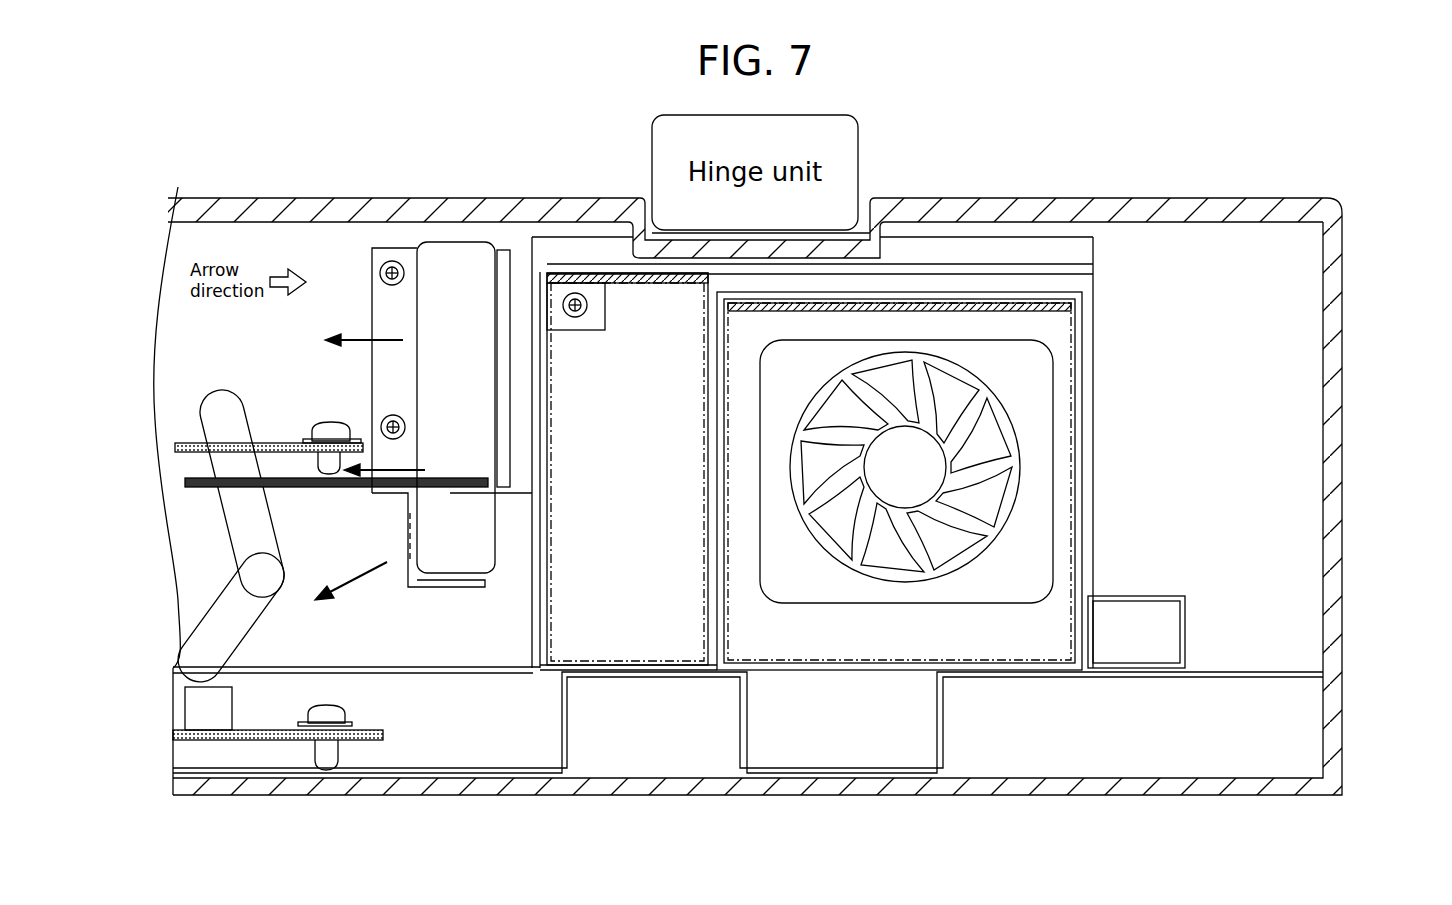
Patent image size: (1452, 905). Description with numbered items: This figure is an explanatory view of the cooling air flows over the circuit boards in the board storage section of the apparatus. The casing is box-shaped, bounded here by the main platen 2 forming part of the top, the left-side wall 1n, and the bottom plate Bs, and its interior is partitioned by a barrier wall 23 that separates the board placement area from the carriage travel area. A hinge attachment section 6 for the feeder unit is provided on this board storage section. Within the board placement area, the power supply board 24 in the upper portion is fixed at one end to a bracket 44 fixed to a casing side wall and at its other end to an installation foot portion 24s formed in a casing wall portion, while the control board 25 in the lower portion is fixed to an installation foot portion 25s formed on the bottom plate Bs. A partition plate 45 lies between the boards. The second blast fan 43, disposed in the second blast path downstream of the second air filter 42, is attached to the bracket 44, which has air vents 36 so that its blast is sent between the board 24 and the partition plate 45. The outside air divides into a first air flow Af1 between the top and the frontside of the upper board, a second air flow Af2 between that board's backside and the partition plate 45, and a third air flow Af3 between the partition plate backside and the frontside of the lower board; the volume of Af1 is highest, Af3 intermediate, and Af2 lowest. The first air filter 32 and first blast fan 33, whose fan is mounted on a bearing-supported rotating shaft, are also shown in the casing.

The left-side wall 1n is at (1340, 352).
The main platen 2 is at (318, 200).
The hinge attachment section 6 is at (862, 202).
The barrier wall 23 is at (478, 655).
The power supply board 24 is at (288, 412).
The installation foot portion 24s is at (333, 422).
The control board 25 is at (385, 732).
The installation foot portion 25s is at (340, 716).
The first air filter 32 is at (905, 320).
The first blast fan 33 is at (1050, 393).
The air vents 36 is at (405, 547).
The second air filter 42 is at (630, 287).
The second blast fan 43 is at (446, 250).
The bracket 44 is at (378, 250).
The partition plate 45 is at (450, 478).
The first air flow Af1 is at (365, 340).
The second air flow Af2 is at (365, 485).
The third air flow Af3 is at (354, 588).
The bottom plate Bs is at (862, 778).